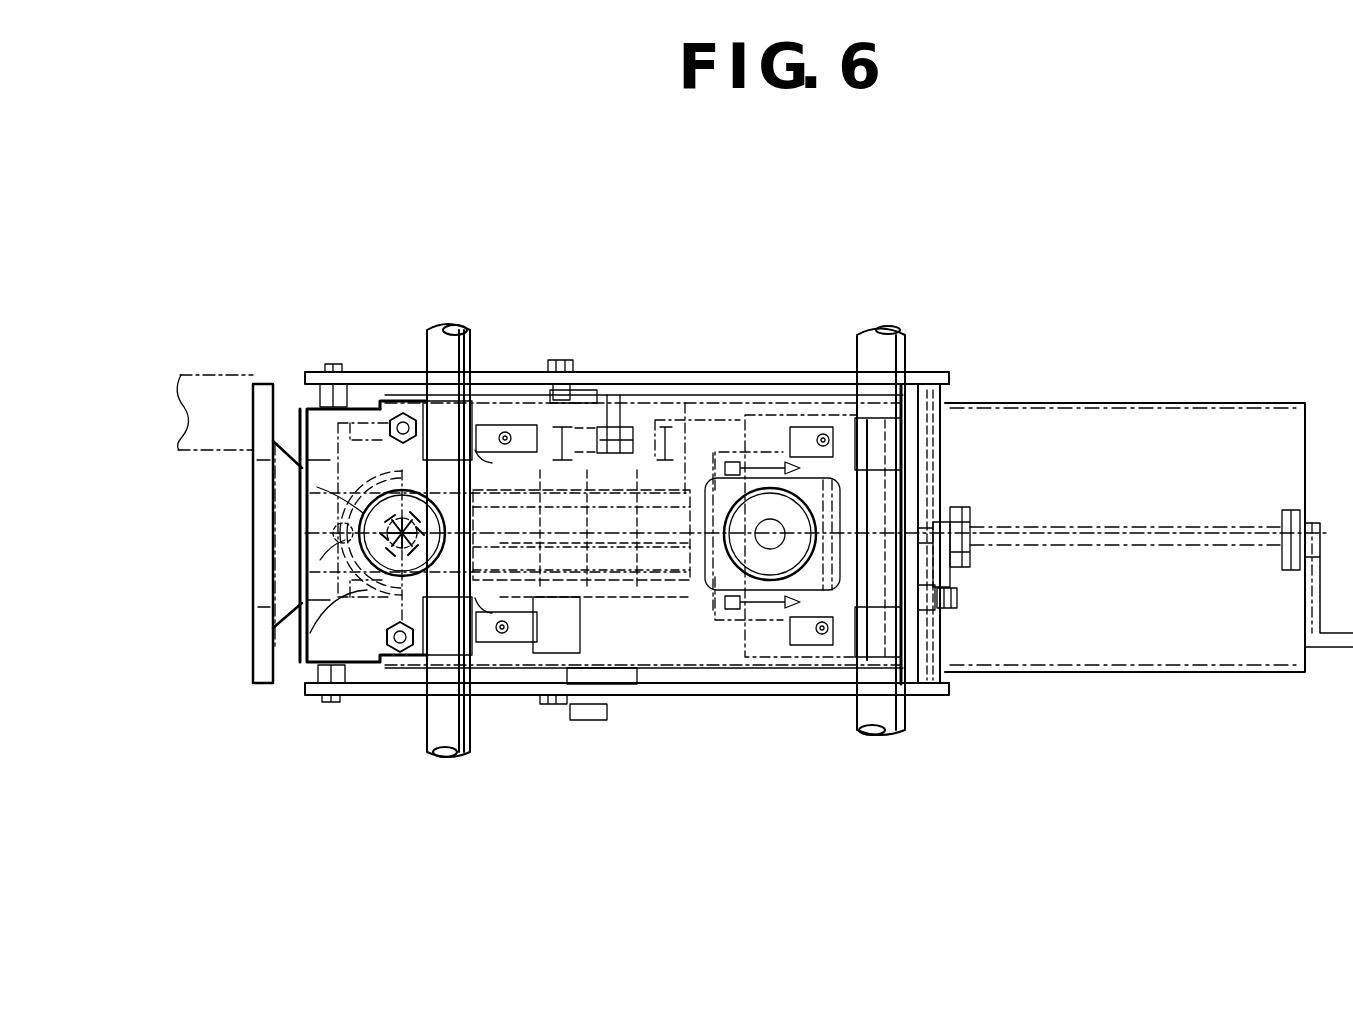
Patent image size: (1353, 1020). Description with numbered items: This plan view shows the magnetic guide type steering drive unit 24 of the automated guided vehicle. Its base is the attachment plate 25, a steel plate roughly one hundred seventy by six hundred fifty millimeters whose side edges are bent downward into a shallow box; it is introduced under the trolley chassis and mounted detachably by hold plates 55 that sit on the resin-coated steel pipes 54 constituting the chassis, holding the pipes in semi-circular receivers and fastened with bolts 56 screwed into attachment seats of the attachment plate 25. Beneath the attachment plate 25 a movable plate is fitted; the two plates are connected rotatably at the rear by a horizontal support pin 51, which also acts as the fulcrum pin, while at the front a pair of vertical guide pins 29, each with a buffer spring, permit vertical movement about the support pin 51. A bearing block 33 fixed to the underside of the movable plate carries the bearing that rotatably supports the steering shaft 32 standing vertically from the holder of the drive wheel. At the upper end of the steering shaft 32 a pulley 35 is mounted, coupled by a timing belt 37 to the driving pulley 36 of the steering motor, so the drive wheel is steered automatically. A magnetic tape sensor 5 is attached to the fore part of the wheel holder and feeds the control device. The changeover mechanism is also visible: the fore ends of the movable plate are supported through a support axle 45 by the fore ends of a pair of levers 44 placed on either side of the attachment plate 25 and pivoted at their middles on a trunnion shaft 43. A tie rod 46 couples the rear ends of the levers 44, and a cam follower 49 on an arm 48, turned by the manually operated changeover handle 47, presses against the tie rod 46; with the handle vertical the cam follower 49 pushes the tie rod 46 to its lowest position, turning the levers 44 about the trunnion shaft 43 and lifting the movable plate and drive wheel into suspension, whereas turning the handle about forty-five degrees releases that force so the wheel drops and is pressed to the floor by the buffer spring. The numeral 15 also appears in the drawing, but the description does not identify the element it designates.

The magnetic tape sensor 5 is at (253, 426).
The frame member 15 is at (212, 373).
The steering drive unit 24 is at (1097, 392).
The attachment plate 25 is at (1158, 425).
The vertical guide pins 29 is at (403, 418).
The steering shaft 32 is at (398, 530).
The bearing block 33 is at (363, 592).
The pulley 35 is at (362, 547).
The driving pulley 36 is at (722, 562).
The timing belt 37 is at (673, 492).
The trunnion shaft 43 is at (565, 372).
The levers 44 is at (632, 372).
The support axle 45 is at (332, 372).
The tie rod 46 is at (943, 430).
The changeover handle 47 is at (1340, 650).
The arm 48 is at (950, 578).
The cam follower 49 is at (923, 612).
The support pin 51 is at (882, 500).
The resin-coated steel pipes 54 is at (440, 350).
The hold plates 55 is at (490, 400).
The bolts 56 is at (507, 432).